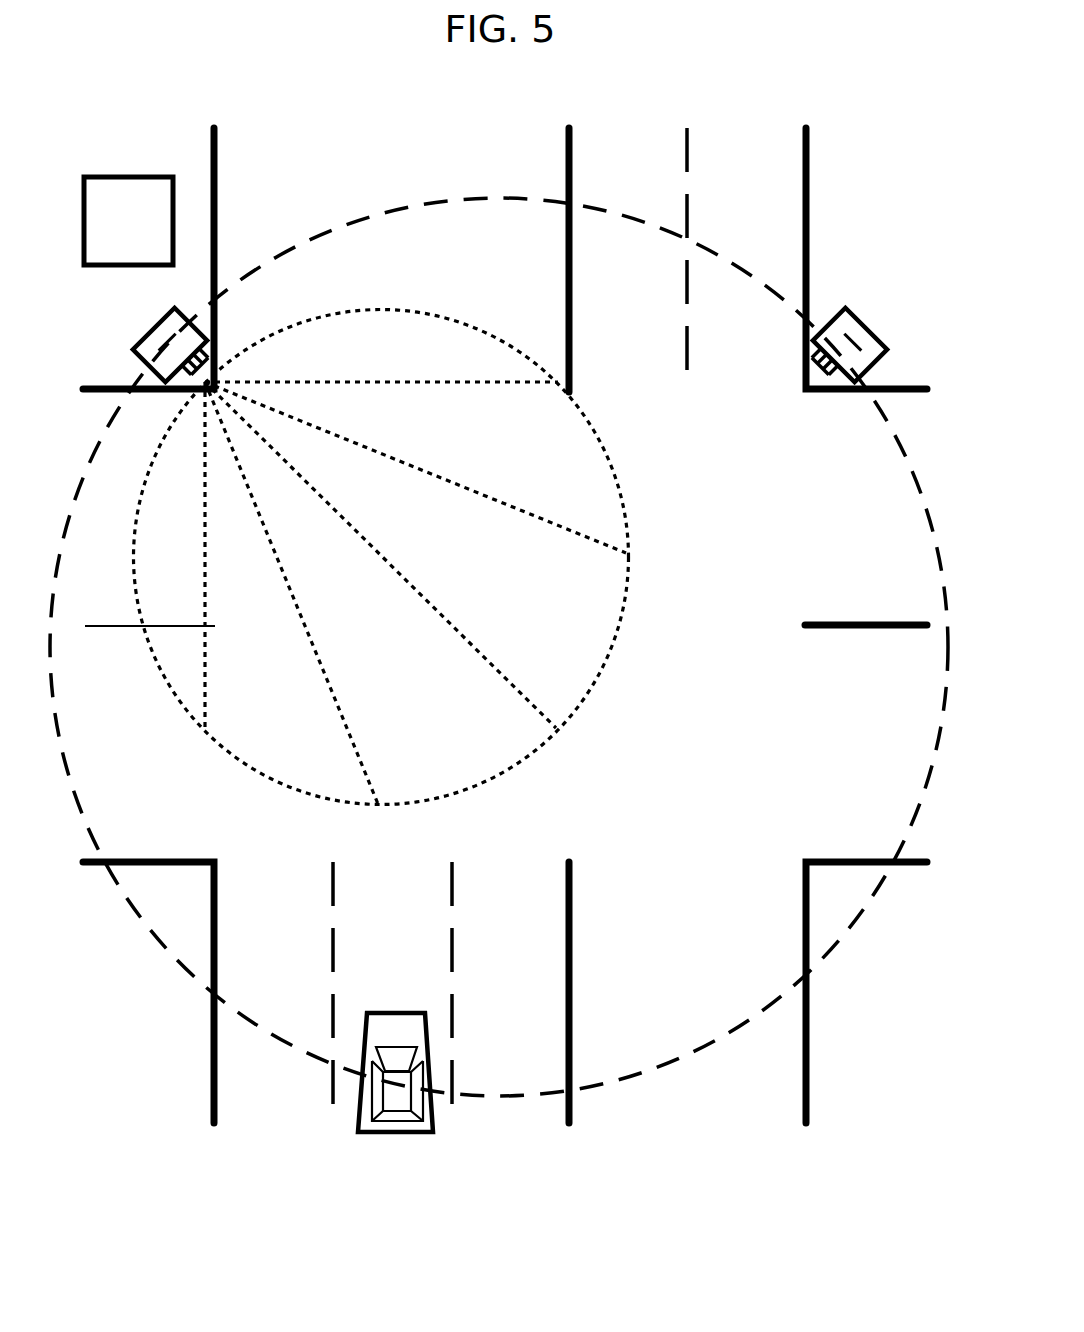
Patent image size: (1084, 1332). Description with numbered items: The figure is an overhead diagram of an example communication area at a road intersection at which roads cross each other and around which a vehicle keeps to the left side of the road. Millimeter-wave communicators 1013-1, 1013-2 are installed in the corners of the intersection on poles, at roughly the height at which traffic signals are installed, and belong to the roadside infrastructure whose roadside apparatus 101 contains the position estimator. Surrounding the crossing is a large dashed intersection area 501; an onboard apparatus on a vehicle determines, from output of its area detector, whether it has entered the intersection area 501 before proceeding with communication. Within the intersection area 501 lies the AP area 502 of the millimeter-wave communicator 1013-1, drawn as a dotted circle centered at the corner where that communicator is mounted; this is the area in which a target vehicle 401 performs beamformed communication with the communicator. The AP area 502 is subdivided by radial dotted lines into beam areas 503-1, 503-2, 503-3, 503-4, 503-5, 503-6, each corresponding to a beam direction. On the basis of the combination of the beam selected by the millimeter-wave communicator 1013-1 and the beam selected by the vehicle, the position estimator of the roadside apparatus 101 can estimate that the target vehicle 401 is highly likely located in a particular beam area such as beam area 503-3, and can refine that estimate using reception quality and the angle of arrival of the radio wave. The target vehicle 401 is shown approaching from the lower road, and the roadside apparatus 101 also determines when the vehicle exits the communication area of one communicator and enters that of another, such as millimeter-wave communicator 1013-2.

The roadside apparatus 101 is at (121, 176).
The millimeter-wave communicator 1013-1 is at (150, 332).
The millimeter-wave communicator 1013-2 is at (862, 330).
The intersection area 501 is at (394, 212).
The AP area 502 is at (438, 315).
The beam area 503-1 is at (363, 348).
The beam area 503-2 is at (594, 472).
The beam area 503-3 is at (582, 674).
The beam area 503-4 is at (500, 746).
The beam area 503-5 is at (265, 786).
The beam area 503-6 is at (170, 600).
The target vehicle 401 is at (394, 1012).